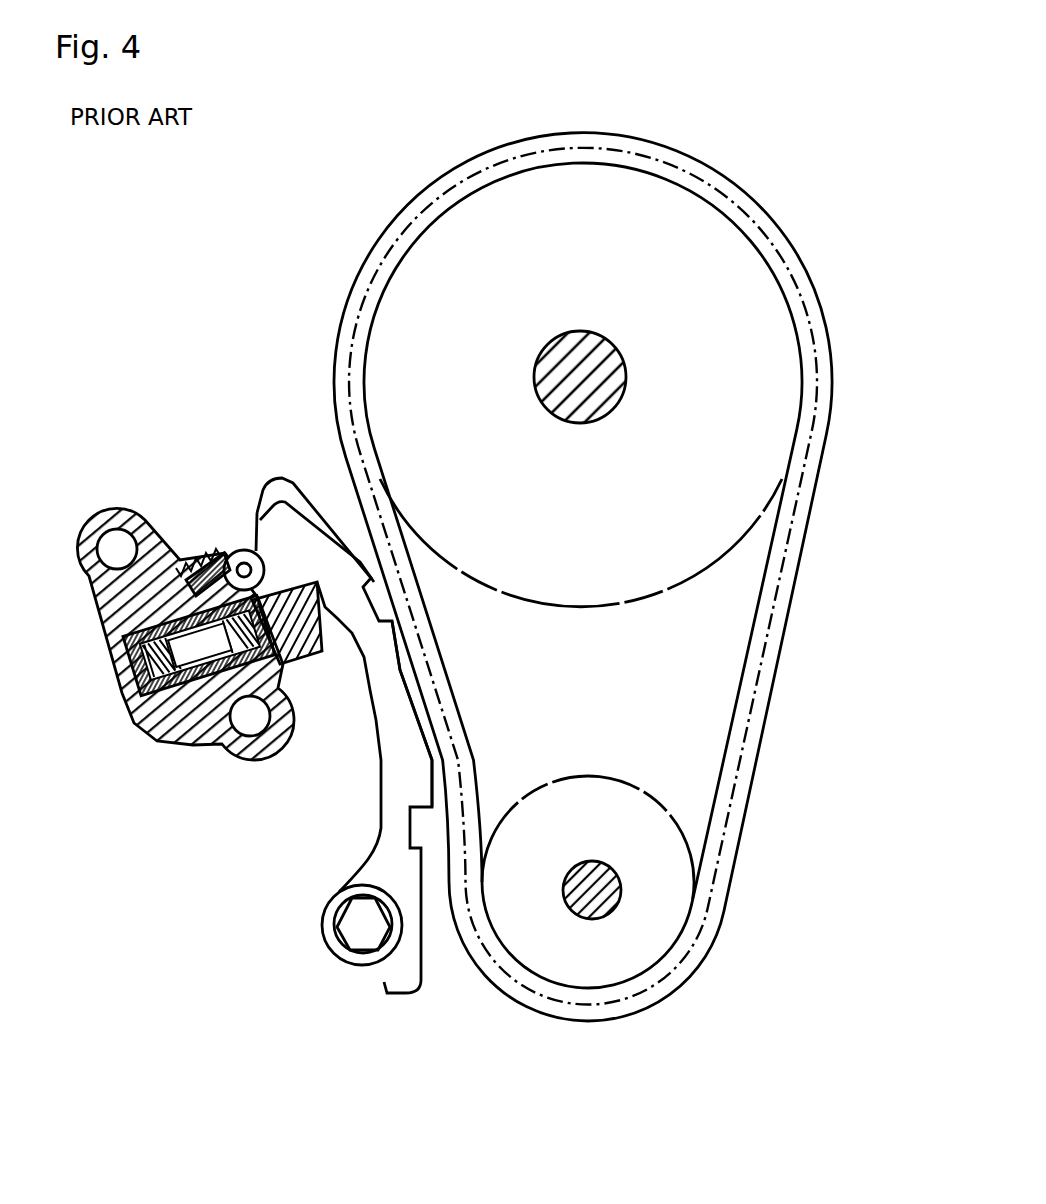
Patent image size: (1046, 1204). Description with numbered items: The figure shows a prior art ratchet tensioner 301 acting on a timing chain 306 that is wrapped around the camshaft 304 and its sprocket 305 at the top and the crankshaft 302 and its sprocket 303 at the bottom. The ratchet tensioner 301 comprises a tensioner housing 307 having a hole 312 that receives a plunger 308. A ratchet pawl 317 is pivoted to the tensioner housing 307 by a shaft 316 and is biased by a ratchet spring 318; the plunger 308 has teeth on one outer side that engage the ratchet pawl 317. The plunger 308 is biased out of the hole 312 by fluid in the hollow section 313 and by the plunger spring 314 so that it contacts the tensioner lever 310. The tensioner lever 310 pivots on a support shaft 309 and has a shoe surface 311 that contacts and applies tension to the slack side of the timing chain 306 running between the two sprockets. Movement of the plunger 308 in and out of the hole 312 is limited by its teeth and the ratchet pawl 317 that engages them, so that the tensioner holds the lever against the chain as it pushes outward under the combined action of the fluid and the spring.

The ratchet tensioner 301 is at (187, 604).
The crankshaft 302 is at (613, 903).
The sprocket 303 is at (672, 891).
The camshaft 304 is at (623, 362).
The sprocket 305 is at (780, 352).
The timing chain 306 is at (818, 440).
The tensioner housing 307 is at (171, 727).
The plunger 308 is at (321, 655).
The support shaft 309 is at (355, 935).
The tensioner lever 310 is at (407, 757).
The shoe surface 311 is at (430, 676).
The hole 312 is at (126, 699).
The hollow section 313 is at (153, 688).
The plunger spring 314 is at (122, 632).
The shaft 316 is at (248, 549).
The ratchet pawl 317 is at (222, 545).
The ratchet spring 318 is at (184, 552).